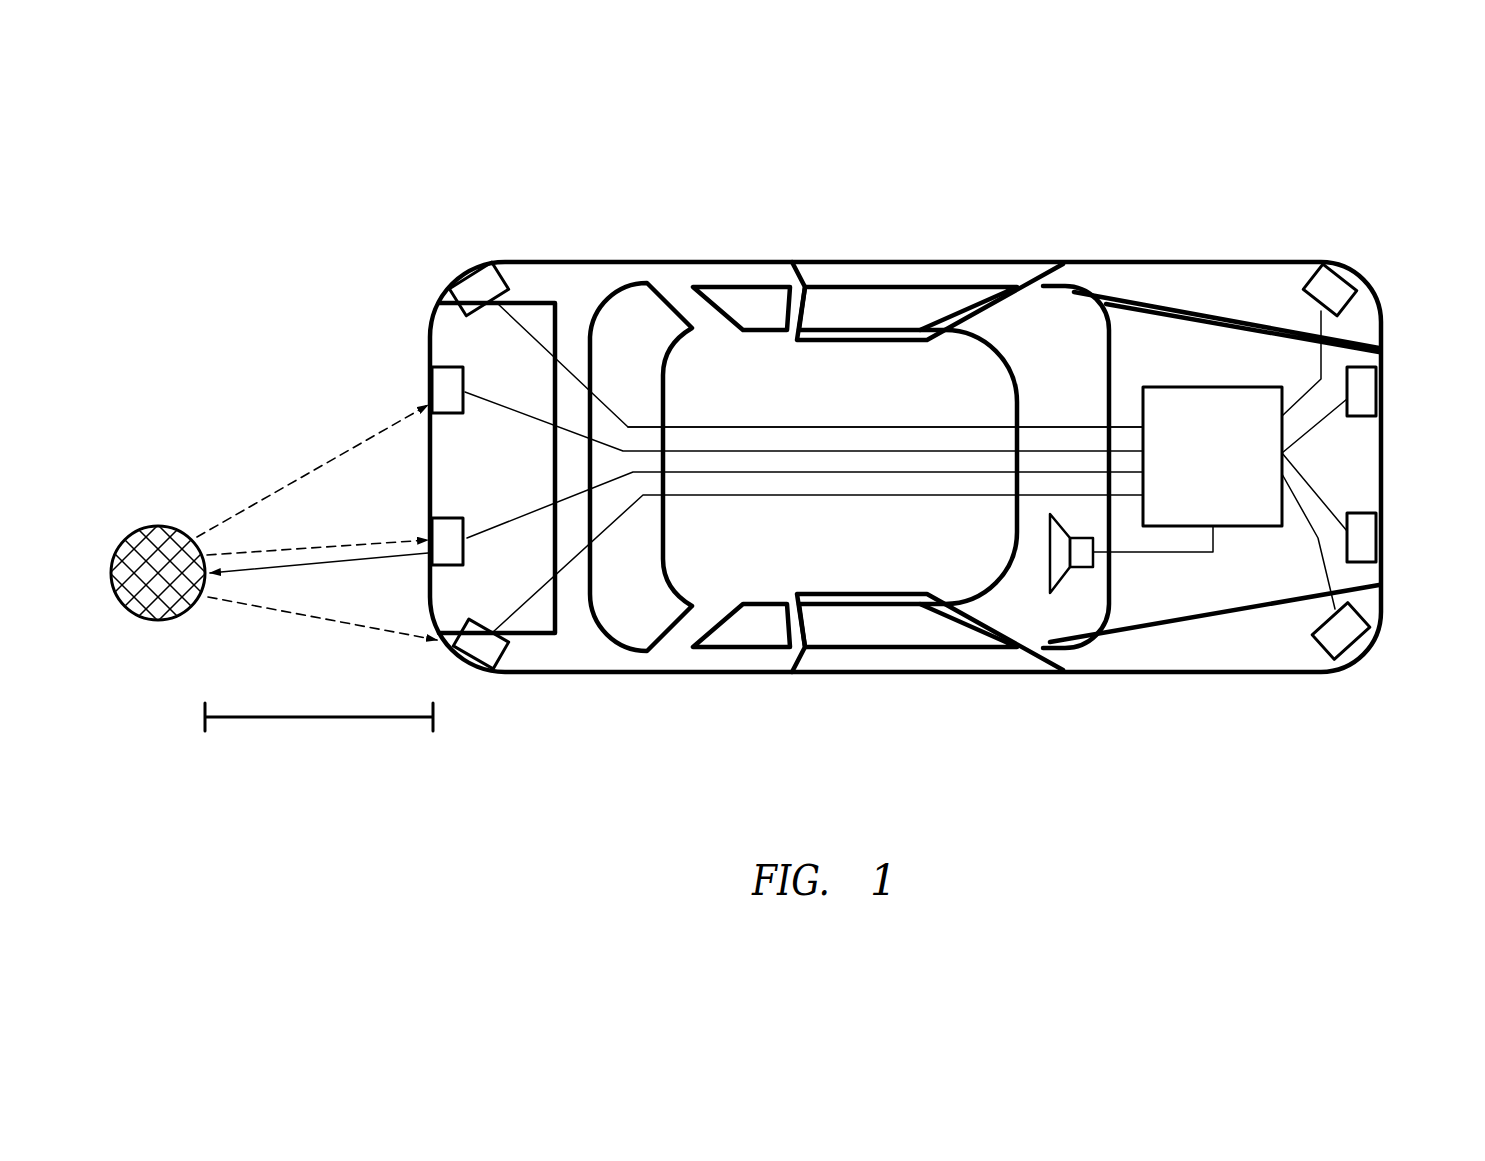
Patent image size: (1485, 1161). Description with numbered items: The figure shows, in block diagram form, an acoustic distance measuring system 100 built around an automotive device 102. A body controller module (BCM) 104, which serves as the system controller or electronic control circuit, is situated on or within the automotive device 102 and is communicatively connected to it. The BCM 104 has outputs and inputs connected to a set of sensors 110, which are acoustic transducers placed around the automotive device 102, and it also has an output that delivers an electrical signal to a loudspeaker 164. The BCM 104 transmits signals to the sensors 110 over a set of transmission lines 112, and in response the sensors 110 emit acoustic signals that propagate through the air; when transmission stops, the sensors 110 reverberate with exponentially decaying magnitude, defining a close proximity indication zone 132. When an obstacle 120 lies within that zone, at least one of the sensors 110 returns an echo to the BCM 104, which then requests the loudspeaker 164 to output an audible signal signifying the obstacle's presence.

The acoustic distance measuring system 100 is at (1238, 178).
The automotive device 102 is at (583, 277).
The body controller module (BCM) 104 is at (1192, 486).
The sensors 110 is at (485, 287).
The transmission lines 112 is at (762, 427).
The obstacle 120 is at (157, 537).
The proximity indication zone 132 is at (337, 717).
The loudspeaker 164 is at (1082, 555).